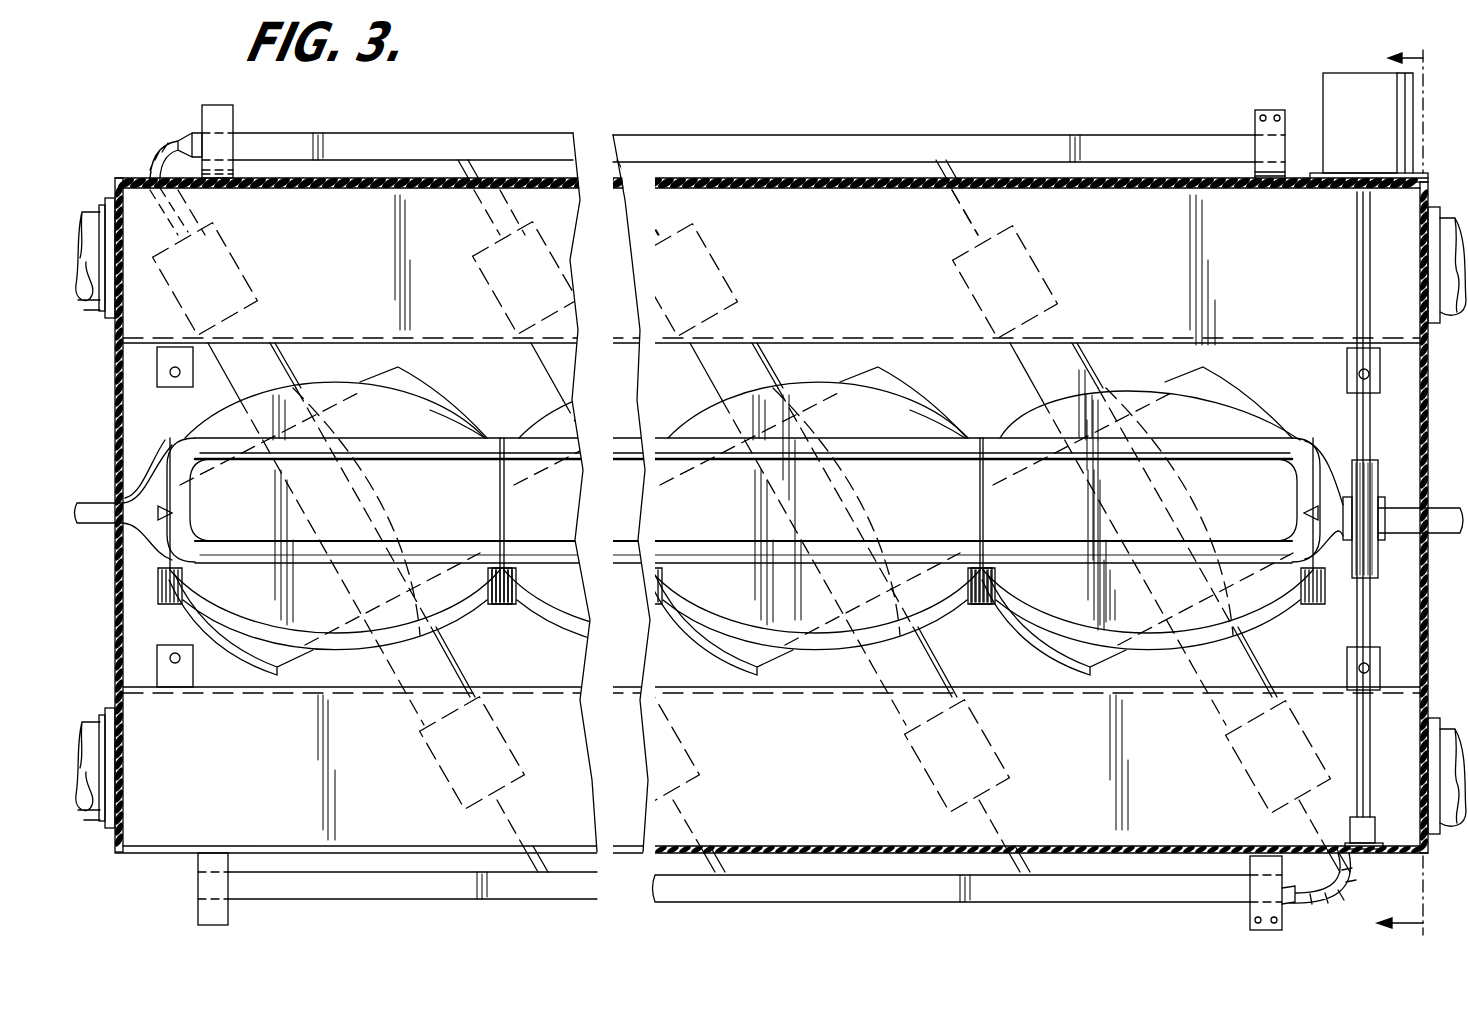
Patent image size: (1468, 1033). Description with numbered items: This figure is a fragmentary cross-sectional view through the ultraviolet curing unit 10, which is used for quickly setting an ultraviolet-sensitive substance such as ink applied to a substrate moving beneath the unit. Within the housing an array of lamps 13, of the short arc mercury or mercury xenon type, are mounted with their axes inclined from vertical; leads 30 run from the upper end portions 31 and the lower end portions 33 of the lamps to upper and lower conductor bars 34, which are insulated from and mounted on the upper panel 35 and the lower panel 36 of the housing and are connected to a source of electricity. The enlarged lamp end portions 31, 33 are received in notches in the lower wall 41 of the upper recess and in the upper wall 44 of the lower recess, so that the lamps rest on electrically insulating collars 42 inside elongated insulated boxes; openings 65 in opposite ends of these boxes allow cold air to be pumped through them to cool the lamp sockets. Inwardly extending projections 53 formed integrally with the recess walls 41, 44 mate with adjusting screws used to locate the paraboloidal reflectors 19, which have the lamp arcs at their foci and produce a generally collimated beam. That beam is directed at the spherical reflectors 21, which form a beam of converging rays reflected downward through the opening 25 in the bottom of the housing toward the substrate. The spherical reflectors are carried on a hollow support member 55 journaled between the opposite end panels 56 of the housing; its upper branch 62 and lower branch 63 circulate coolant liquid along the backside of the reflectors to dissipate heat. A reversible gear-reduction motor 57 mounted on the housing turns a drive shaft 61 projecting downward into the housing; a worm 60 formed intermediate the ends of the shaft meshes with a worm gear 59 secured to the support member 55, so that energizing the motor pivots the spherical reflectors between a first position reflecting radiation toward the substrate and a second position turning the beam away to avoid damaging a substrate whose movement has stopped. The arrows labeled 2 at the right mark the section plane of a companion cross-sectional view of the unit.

The section line 2- 2 is at (1417, 489).
The unit 10 is at (776, 131).
The lamp 13 is at (392, 650).
The paraboloidal reflector 19 is at (405, 378).
The spherical reflector 21 is at (455, 420).
The opening 25 is at (168, 855).
The leads 30 is at (470, 160).
The upper end portion 31 is at (250, 263).
The lower end portion 33 is at (440, 776).
The conductor bar 34 is at (222, 150).
The upper panel 35 is at (1113, 180).
The lower panel 36 is at (836, 855).
The lower wall 41 is at (857, 348).
The electrically insulating collar 42 is at (392, 722).
The upper wall 44 is at (705, 689).
The inwardly extending projection 53 is at (175, 388).
The support member 55 is at (770, 565).
The end panel 56 is at (115, 430).
The motor 57 is at (1407, 96).
The worm gear 59 is at (1378, 470).
The worm 60 is at (1356, 462).
The drive shaft 61 is at (1358, 256).
The upper branch 62 is at (905, 462).
The lower branch 63 is at (1034, 530).
The opening 65 is at (103, 208).